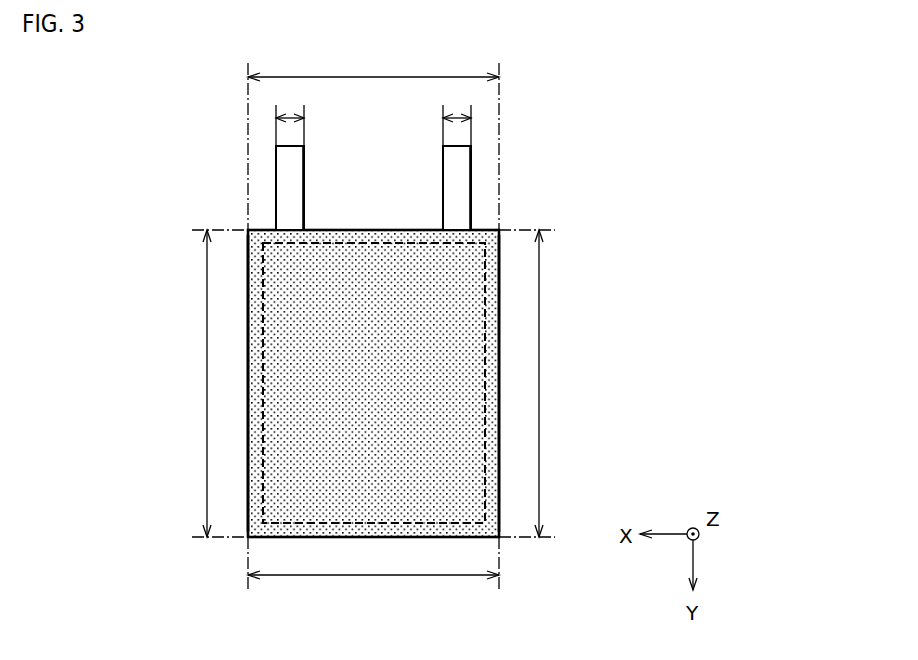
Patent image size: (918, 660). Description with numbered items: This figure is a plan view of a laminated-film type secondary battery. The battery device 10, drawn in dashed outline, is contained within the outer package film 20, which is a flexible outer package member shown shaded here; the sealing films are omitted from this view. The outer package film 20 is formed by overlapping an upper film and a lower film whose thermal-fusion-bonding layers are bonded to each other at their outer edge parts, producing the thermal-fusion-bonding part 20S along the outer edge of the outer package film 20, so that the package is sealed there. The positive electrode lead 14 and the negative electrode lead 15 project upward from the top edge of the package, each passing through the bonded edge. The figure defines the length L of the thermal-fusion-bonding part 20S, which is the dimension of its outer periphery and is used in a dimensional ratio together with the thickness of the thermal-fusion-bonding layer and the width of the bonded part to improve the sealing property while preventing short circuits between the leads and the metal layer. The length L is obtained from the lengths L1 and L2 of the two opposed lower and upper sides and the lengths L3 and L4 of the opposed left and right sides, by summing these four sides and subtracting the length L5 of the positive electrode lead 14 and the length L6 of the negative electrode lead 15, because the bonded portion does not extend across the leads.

The battery device 10 is at (258, 317).
The positive electrode lead 14 is at (457, 175).
The negative electrode lead 15 is at (290, 164).
The outer package film 20 is at (470, 470).
The thermal-fusion-bonding part 20S is at (258, 456).
The length of the thermal-fusion-bonding part L is at (503, 294).
The length of the lower side L1 is at (372, 576).
The length of the upper side L2 is at (373, 76).
The length of the left side L3 is at (207, 383).
The length of the right side L4 is at (540, 383).
The length of the positive electrode lead L5 is at (290, 120).
The length of the negative electrode lead L6 is at (456, 120).